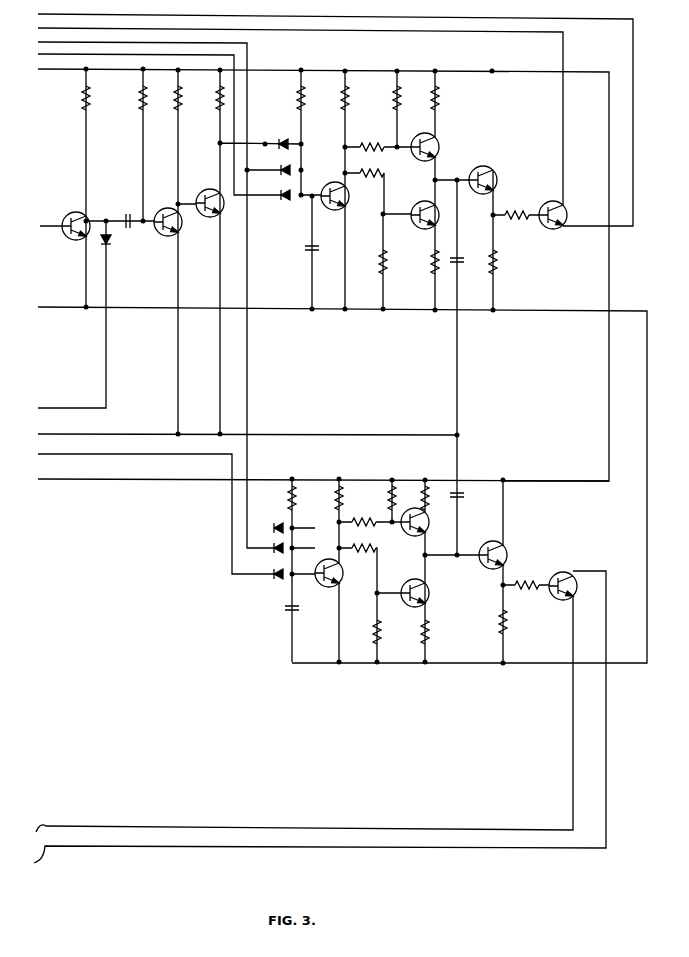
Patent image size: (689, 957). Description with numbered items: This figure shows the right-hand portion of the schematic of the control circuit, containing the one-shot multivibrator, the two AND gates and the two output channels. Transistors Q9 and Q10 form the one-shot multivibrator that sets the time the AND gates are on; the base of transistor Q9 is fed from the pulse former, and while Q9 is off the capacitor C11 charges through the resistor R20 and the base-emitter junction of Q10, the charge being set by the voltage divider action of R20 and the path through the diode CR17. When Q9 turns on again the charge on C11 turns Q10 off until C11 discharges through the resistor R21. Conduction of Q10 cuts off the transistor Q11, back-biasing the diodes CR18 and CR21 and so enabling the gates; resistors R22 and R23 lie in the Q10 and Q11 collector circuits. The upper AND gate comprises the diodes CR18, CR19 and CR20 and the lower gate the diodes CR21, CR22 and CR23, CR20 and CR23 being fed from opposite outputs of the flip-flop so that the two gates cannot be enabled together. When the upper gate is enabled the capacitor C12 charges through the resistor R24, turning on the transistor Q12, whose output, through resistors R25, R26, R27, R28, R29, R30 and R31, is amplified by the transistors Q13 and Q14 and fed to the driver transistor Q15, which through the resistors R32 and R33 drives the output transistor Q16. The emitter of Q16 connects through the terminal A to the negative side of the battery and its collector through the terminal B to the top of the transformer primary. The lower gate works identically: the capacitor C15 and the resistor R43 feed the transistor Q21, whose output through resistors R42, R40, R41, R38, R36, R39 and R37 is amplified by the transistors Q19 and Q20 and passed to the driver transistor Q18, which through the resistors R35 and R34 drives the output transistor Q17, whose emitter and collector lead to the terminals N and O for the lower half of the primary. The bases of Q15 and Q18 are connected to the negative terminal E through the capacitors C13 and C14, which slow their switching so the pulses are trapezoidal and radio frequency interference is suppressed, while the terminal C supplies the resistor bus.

The terminal A is at (327, 116).
The terminal B is at (292, 113).
The terminal C is at (315, 271).
The negative terminal E is at (334, 481).
The terminal N is at (298, 715).
The terminal O is at (315, 722).
The resistor R20 is at (73, 98).
The resistor R21 is at (127, 98).
The resistor R22 is at (166, 98).
The resistor R23 is at (206, 98).
The resistor R24 is at (285, 98).
The resistor R25 is at (332, 98).
The resistor R26 is at (368, 137).
The resistor R27 is at (367, 164).
The resistor R28 is at (380, 98).
The resistor R29 is at (369, 262).
The resistor R30 is at (450, 98).
The resistor R31 is at (422, 262).
The resistor R32 is at (507, 262).
The resistor R33 is at (518, 223).
The resistor R34 is at (527, 577).
The resistor R35 is at (487, 622).
The resistor R36 is at (432, 492).
The resistor R37 is at (408, 632).
The resistor R38 is at (405, 498).
The resistor R39 is at (359, 632).
The resistor R40 is at (363, 515).
The resistor R41 is at (362, 541).
The resistor R42 is at (352, 498).
The resistor R43 is at (305, 498).
The capacitor C11 is at (129, 212).
The capacitor C12 is at (300, 255).
The capacitor C13 is at (469, 260).
The capacitor C14 is at (470, 495).
The capacitor C15 is at (277, 608).
The diode CR17 is at (126, 243).
The diode CR18 is at (289, 129).
The diode CR19 is at (293, 166).
The diode CR20 is at (290, 206).
The diode CR21 is at (260, 524).
The diode CR22 is at (264, 543).
The diode CR23 is at (264, 567).
The transistor Q9 is at (71, 216).
The transistor Q10 is at (165, 212).
The transistor Q11 is at (205, 195).
The transistor Q12 is at (350, 196).
The transistor Q13 is at (440, 145).
The transistor Q14 is at (417, 206).
The driver transistor Q15 is at (497, 178).
The output transistor Q16 is at (549, 205).
The output transistor Q17 is at (562, 576).
The driver transistor Q18 is at (507, 554).
The transistor Q19 is at (429, 522).
The transistor Q20 is at (429, 593).
The transistor Q21 is at (341, 573).